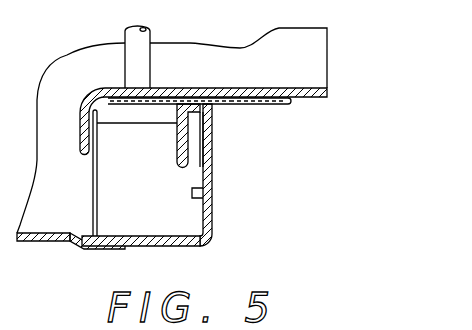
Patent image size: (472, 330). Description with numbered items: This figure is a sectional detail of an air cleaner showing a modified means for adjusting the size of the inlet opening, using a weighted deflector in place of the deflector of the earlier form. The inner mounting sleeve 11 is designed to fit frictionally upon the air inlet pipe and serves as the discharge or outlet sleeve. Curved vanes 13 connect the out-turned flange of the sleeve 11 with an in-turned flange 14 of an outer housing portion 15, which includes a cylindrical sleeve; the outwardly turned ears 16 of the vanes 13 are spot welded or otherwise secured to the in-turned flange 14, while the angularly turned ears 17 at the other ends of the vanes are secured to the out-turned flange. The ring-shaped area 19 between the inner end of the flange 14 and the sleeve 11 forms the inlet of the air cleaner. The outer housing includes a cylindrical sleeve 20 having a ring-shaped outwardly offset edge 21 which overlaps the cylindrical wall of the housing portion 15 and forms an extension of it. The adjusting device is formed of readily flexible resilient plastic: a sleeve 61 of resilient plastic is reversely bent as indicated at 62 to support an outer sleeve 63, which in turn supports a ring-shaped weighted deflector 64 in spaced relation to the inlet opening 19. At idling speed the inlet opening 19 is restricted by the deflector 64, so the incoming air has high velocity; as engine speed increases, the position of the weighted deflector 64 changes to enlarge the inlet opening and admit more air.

The inner mounting sleeve 11 is at (293, 92).
The curved vanes 13 is at (125, 153).
The in-turned flange 14 is at (212, 190).
The outer housing portion 15 is at (157, 247).
The outwardly turned ears 16 is at (193, 188).
The angularly turned ears 17 is at (85, 163).
The ring-shaped area 19 is at (203, 150).
The cylindrical sleeve 20 is at (49, 243).
The ring-shaped outwardly offset edge 21 is at (124, 250).
The sleeve 61 is at (160, 90).
The reversely bent portion 62 is at (291, 103).
The outer sleeve 63 is at (228, 104).
The weighted deflector 64 is at (188, 128).